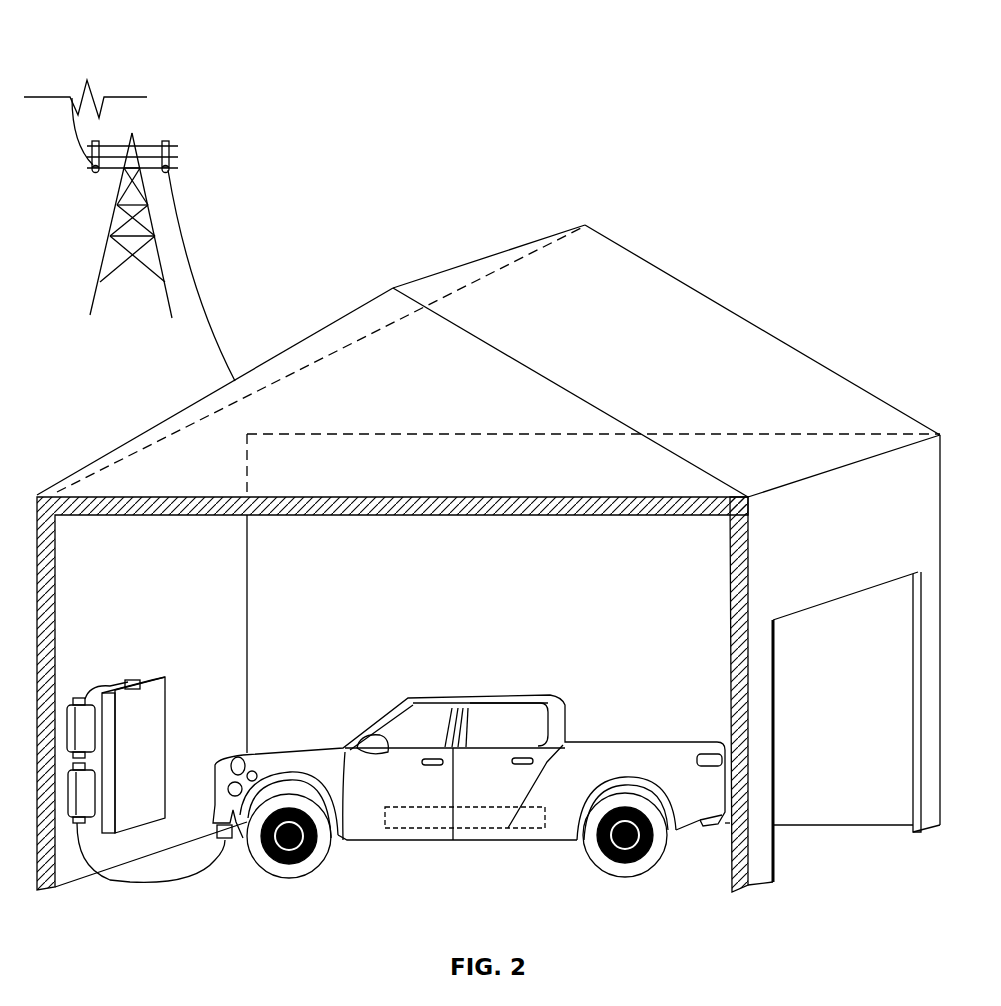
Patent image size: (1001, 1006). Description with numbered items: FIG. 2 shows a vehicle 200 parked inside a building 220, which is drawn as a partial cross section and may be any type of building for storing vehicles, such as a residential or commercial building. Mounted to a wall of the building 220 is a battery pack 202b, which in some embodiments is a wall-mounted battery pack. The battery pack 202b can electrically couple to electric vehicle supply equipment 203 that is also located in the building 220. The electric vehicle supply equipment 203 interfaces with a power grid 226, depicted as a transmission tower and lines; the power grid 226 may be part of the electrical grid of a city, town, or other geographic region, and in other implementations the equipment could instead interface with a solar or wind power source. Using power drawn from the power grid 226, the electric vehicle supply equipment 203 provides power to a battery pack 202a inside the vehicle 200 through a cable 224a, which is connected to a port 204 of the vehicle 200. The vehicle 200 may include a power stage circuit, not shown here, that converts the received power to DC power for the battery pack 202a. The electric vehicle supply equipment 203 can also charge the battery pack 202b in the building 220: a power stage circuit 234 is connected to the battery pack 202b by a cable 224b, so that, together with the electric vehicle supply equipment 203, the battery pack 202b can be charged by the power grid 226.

The vehicle 200 is at (535, 655).
The battery pack 202a is at (385, 830).
The battery pack 202b is at (168, 723).
The electric vehicle supply equipment 203 is at (77, 823).
The port 204 is at (255, 772).
The building 220 is at (770, 332).
The cable 224a is at (228, 840).
The cable 224b is at (122, 678).
The power grid 226 is at (192, 128).
The power stage circuit 234 is at (73, 700).